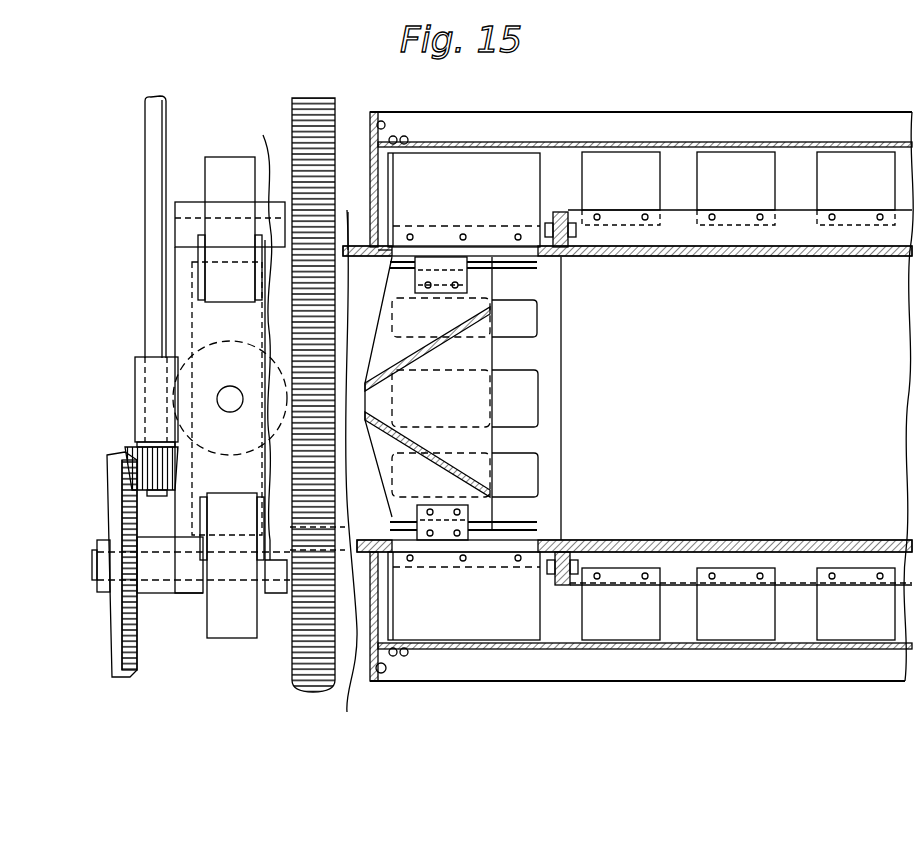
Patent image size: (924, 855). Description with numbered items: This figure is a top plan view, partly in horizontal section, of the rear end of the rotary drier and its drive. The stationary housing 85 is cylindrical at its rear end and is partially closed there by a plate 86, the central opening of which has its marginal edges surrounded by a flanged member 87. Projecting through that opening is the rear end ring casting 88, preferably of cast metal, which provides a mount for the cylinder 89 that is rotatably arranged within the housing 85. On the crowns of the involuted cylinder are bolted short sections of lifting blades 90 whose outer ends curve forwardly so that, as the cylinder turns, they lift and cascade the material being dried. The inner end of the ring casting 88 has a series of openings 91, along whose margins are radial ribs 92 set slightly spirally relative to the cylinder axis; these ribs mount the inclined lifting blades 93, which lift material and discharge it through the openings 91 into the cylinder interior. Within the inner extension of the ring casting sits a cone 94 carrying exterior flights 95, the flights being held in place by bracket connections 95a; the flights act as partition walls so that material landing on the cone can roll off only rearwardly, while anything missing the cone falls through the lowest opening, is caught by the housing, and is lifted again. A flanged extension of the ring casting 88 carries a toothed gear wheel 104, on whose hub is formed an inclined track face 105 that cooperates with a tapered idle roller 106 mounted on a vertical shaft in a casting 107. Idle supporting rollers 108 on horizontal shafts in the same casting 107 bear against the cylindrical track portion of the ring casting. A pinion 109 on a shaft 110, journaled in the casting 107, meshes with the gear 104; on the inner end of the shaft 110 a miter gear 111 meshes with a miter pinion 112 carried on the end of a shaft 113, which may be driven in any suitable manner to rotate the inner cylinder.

The stationary housing 85 is at (620, 142).
The plate 86 is at (370, 168).
The flanged member 87 is at (348, 222).
The rear end ring casting 88 is at (380, 258).
The cylinder 89 is at (690, 258).
The lifting blades 90 is at (741, 396).
The openings 91 is at (520, 327).
The radial ribs 92 is at (447, 228).
The inclined lifting blades 93 is at (497, 168).
The cone 94 is at (441, 398).
The flights 95 is at (441, 397).
The bracket connections 95a is at (483, 268).
The toothed gear wheel 104 is at (305, 103).
The inclined track face 105 is at (257, 335).
The tapered idle roller 106 is at (200, 345).
The casting 107 is at (185, 305).
The idle supporting rollers 108 is at (235, 665).
The pinion 109 is at (339, 476).
The shaft 110 is at (93, 572).
The miter gear 111 is at (108, 505).
The miter pinion 112 is at (140, 447).
The shaft 113 is at (145, 170).